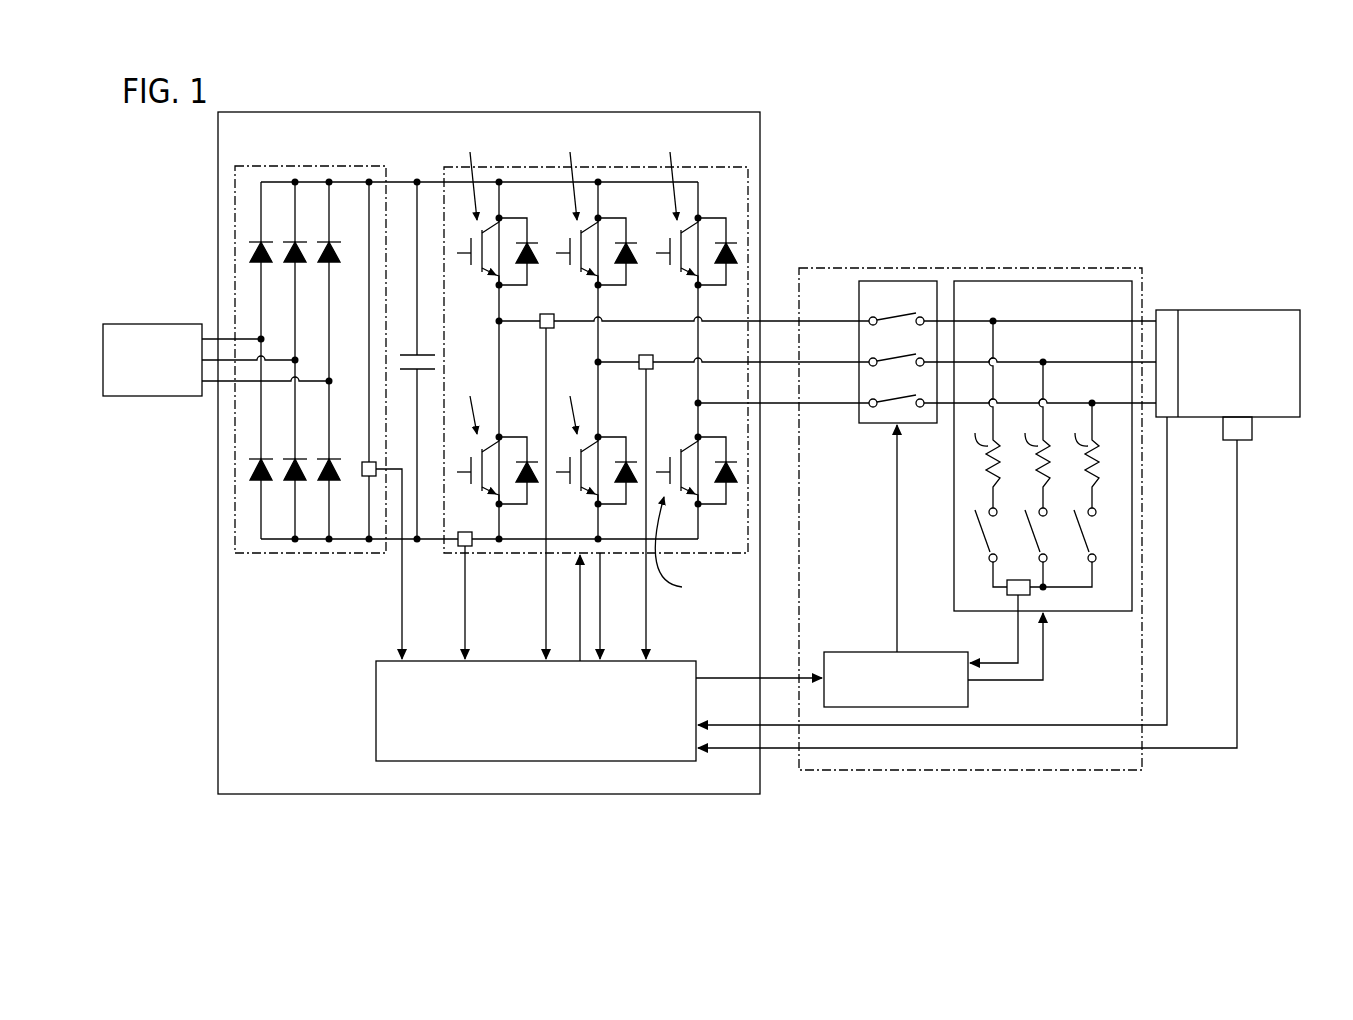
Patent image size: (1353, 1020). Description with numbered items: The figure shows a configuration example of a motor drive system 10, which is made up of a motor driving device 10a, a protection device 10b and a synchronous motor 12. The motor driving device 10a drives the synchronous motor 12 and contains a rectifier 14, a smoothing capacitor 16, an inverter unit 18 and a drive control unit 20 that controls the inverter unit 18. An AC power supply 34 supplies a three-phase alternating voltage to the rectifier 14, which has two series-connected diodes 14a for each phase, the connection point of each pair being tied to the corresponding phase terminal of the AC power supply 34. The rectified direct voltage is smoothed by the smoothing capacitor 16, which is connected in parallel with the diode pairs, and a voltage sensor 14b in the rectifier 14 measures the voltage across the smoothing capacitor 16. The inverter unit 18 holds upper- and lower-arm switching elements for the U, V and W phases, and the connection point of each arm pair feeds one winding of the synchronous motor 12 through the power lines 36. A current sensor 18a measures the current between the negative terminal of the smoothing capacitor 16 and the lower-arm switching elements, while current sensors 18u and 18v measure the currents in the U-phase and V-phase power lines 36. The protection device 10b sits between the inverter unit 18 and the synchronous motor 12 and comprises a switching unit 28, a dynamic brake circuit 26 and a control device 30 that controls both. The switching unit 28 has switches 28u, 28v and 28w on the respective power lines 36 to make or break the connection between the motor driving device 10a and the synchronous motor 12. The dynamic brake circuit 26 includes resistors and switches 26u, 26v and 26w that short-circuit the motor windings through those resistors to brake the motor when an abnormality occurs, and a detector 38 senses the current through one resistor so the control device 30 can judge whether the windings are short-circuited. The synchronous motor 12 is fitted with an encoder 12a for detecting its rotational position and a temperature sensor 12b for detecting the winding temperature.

The motor drive system 10 is at (1073, 114).
The motor driving device 10a is at (733, 112).
The protection device 10b is at (945, 268).
The synchronous motor 12 is at (1233, 310).
The encoder 12a is at (1167, 310).
The temperature sensor 12b is at (1244, 441).
The rectifier 14 is at (278, 166).
The diodes 14a is at (326, 266).
The voltage sensor 14b is at (364, 462).
The smoothing capacitor 16 is at (398, 352).
The inverter unit 18 is at (740, 167).
The current sensor 18a is at (471, 548).
The current sensor 18u is at (545, 330).
The current sensor 18v is at (643, 371).
The drive control unit 20 is at (683, 661).
The dynamic brake circuit 26 is at (1089, 611).
The switch 26u is at (974, 521).
The switch 26v is at (1026, 538).
The switch 26w is at (1090, 537).
The switching unit 28 is at (930, 423).
The switch 28u is at (893, 312).
The switch 28v is at (893, 353).
The switch 28w is at (893, 395).
The control device 30 is at (853, 652).
The AC power supply 34 is at (125, 324).
The power lines 36 is at (775, 319).
The detector 38 is at (1013, 597).